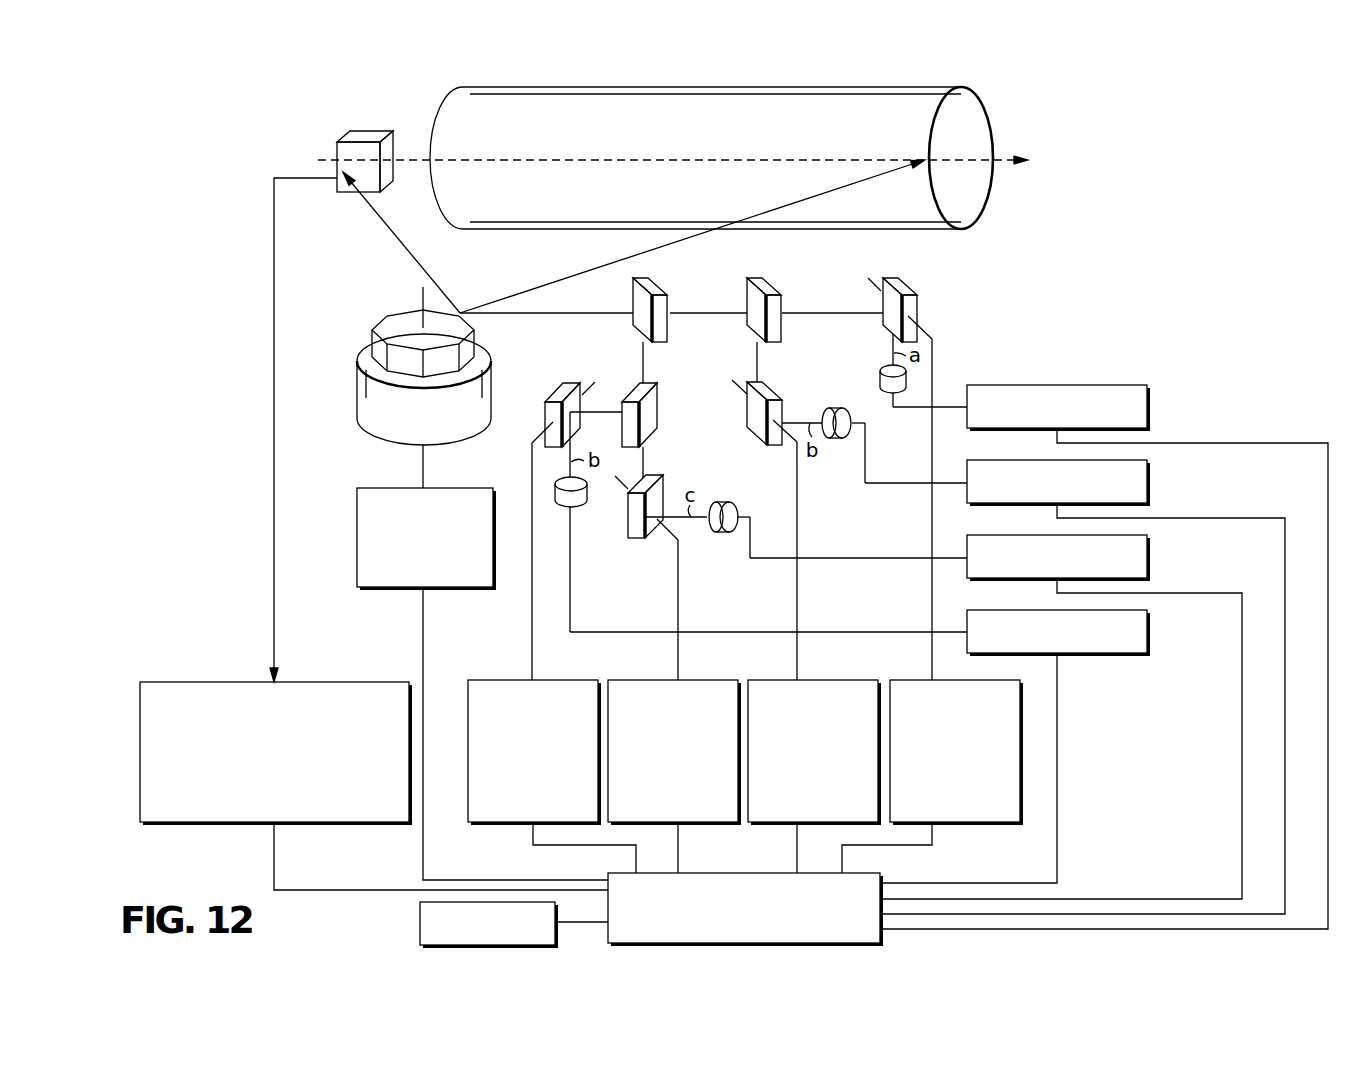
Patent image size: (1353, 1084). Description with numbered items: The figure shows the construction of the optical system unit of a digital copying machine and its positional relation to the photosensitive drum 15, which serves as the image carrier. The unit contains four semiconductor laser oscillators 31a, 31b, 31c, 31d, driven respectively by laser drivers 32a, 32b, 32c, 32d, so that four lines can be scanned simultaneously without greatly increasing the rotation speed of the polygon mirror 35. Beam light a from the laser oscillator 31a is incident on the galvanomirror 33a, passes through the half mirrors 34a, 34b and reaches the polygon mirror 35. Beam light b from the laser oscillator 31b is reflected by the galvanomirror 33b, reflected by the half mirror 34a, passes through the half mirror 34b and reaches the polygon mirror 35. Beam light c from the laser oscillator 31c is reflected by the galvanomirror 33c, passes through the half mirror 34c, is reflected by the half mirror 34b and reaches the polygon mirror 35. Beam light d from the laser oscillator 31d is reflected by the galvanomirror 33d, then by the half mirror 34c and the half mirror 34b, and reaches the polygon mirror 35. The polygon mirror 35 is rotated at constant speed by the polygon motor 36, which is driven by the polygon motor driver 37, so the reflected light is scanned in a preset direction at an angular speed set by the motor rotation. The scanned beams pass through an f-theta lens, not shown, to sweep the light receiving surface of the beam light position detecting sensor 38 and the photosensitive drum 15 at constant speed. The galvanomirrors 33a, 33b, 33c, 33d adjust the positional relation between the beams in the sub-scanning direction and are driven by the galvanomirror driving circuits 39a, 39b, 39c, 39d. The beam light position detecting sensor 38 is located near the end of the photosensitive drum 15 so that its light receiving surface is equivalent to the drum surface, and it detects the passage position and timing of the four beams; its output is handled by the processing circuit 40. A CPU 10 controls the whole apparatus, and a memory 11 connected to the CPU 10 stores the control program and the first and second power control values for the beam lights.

The CPU 10 is at (719, 872).
The memory 11 is at (420, 922).
The photosensitive drum 15 is at (992, 101).
The laser oscillator 31a is at (877, 367).
The laser oscillator 31b is at (832, 407).
The laser oscillator 31c is at (722, 534).
The laser oscillator 31d is at (586, 497).
The laser driver 32a is at (1148, 405).
The laser driver 32b is at (1148, 481).
The laser driver 32c is at (1148, 555).
The laser driver 32d is at (1148, 630).
The galvanomirror 33a is at (912, 290).
The galvanomirror 33b is at (747, 417).
The galvanomirror 33c is at (638, 542).
The galvanomirror 33d is at (545, 417).
The half mirror 34a is at (780, 290).
The half mirror 34b is at (663, 290).
The half mirror 34c is at (658, 417).
The polygon mirror 35 is at (393, 311).
The polygon motor 36 is at (485, 334).
The polygon motor driver 37 is at (465, 591).
The beam light position detecting sensor 38 is at (372, 131).
The galvanomirror driving circuit 39a is at (914, 680).
The galvanomirror driving circuit 39b is at (837, 680).
The galvanomirror driving circuit 39c is at (719, 680).
The galvanomirror driving circuit 39d is at (572, 680).
The processing circuit 40 is at (324, 681).